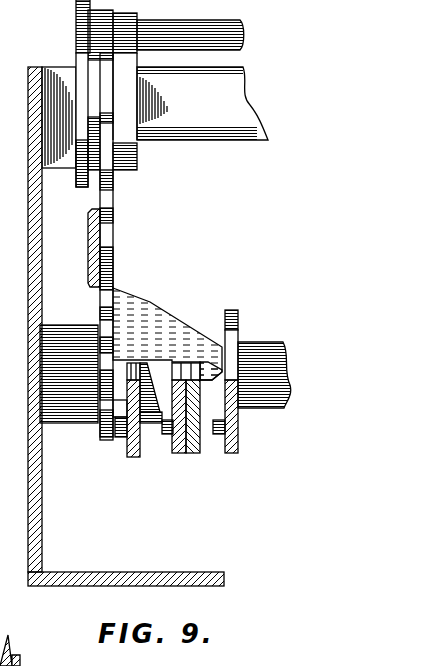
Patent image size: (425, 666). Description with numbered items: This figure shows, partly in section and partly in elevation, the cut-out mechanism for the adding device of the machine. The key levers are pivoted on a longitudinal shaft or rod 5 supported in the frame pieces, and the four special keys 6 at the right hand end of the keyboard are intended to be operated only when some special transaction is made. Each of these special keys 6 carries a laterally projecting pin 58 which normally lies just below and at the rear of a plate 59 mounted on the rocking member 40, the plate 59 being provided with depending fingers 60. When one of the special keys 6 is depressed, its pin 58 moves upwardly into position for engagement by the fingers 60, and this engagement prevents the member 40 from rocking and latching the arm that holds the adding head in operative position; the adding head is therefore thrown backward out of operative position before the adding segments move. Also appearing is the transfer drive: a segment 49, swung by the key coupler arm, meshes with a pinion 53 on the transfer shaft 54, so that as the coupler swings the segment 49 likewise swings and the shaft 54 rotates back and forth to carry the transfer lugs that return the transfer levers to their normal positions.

The shaft or rod 5 is at (273, 344).
The special keys 6 is at (136, 456).
The rocking member 40 is at (99, 302).
The segment 49 is at (76, 62).
The pinion 53 is at (76, 18).
The transfer shaft 54 is at (244, 21).
The laterally projecting pins 58 is at (123, 436).
The plate 59 is at (150, 314).
The depending fingers 60 is at (213, 373).